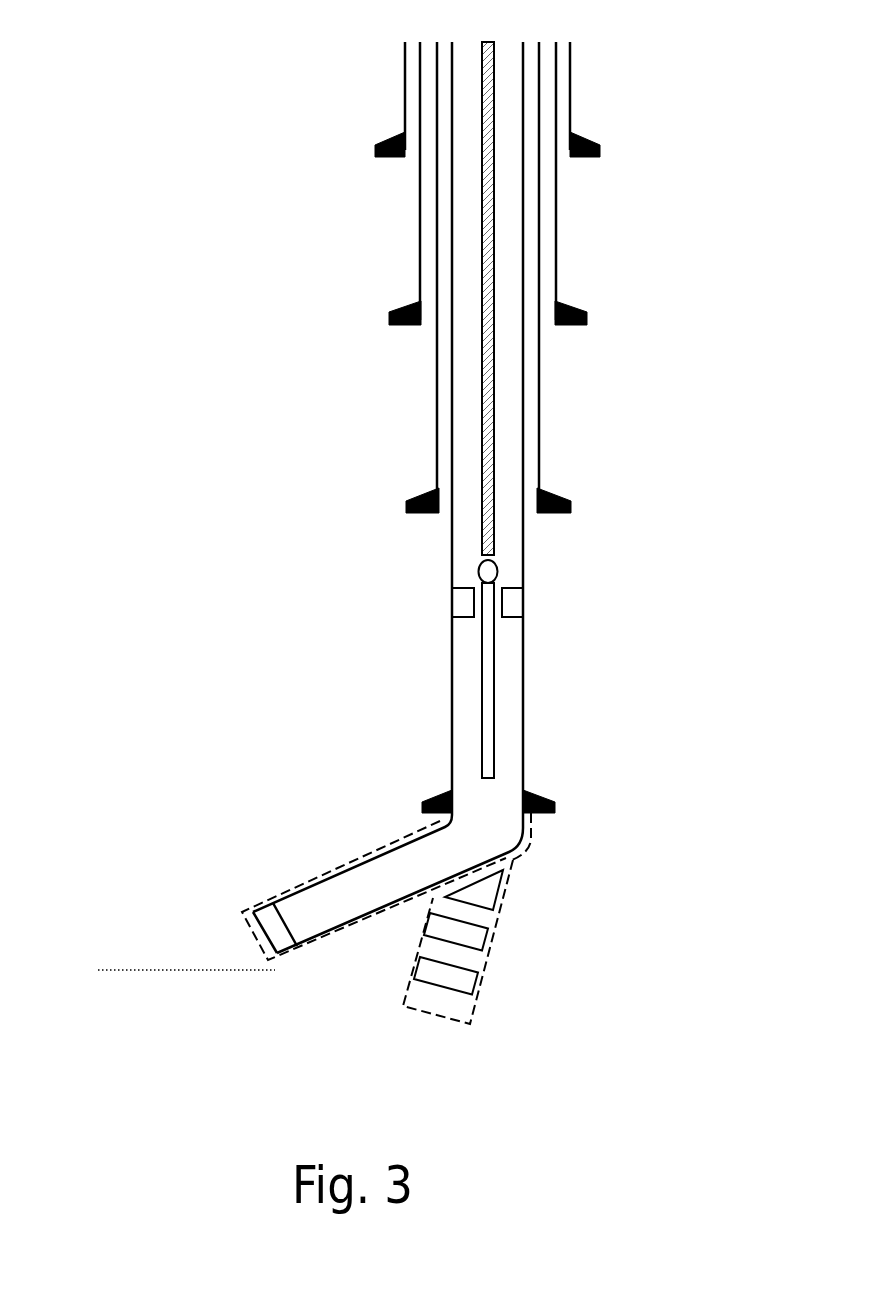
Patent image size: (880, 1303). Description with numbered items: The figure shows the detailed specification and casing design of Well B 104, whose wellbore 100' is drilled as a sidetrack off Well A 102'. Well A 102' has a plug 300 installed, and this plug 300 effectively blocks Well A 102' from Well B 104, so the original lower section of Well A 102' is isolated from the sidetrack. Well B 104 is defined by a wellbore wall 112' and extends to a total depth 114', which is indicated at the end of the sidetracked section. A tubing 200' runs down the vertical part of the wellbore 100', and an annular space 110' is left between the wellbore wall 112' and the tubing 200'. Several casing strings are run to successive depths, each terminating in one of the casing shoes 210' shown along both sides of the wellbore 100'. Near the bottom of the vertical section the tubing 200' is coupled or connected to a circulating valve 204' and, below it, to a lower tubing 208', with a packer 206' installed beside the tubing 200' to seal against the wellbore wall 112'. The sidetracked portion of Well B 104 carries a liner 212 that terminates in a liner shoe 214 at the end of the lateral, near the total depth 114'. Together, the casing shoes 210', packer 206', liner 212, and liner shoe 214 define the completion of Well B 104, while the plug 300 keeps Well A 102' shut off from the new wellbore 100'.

The wellbore 100' is at (384, 572).
The annular space 110' is at (424, 275).
The wellbore wall 112' is at (388, 497).
The tubing 200' is at (602, 298).
The casing shoes 210' is at (548, 500).
The circulating valve 204' is at (591, 594).
The packer 206' is at (577, 635).
The lower tubing 208' is at (592, 684).
The Well B 104 is at (345, 892).
The liner shoe 214 is at (288, 960).
The total depth 114' is at (160, 968).
The Well A 102' is at (494, 981).
The liner 212 is at (487, 895).
The plug 300 is at (497, 900).